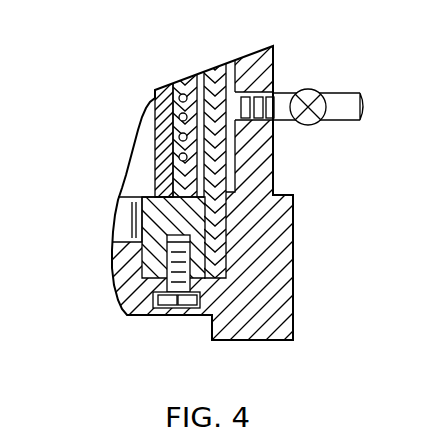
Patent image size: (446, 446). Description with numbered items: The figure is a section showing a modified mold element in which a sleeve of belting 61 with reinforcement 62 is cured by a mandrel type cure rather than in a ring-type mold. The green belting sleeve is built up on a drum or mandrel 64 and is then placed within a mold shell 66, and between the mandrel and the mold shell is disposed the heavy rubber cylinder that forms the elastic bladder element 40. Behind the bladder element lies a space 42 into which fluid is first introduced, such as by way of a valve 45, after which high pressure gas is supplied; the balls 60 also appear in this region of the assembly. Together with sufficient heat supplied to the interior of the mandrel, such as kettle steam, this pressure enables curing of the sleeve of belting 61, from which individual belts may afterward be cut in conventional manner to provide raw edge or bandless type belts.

The bladder element 40 is at (203, 72).
The space 42 is at (231, 74).
The valve 45 is at (306, 89).
The balls 60 is at (180, 124).
The sleeve of belting 61 is at (172, 83).
The reinforcement 62 is at (172, 83).
The mandrel 64 is at (155, 158).
The mold shell 66 is at (275, 152).